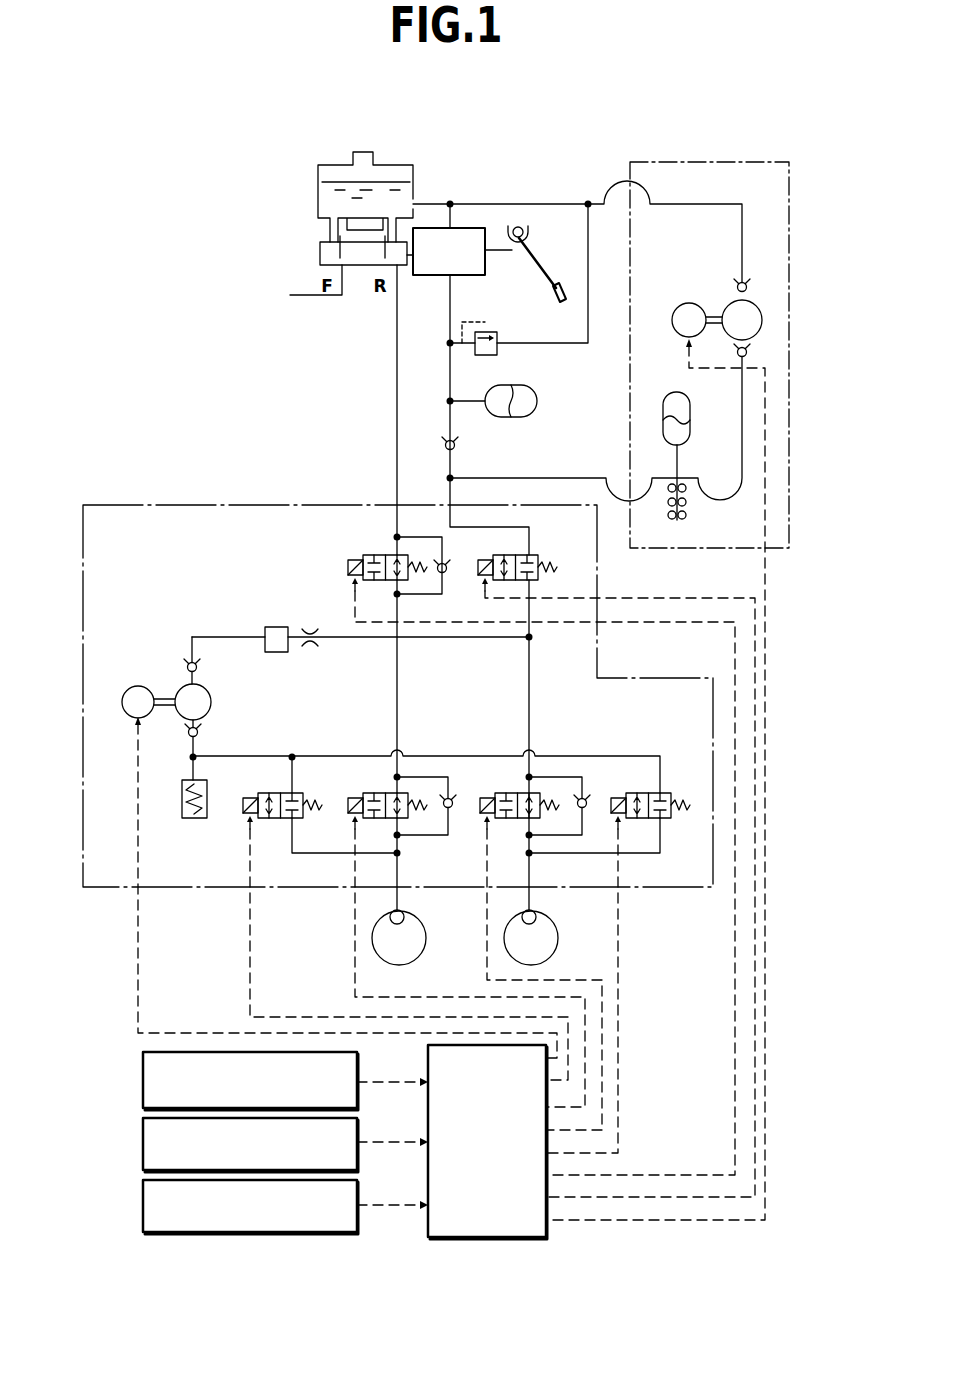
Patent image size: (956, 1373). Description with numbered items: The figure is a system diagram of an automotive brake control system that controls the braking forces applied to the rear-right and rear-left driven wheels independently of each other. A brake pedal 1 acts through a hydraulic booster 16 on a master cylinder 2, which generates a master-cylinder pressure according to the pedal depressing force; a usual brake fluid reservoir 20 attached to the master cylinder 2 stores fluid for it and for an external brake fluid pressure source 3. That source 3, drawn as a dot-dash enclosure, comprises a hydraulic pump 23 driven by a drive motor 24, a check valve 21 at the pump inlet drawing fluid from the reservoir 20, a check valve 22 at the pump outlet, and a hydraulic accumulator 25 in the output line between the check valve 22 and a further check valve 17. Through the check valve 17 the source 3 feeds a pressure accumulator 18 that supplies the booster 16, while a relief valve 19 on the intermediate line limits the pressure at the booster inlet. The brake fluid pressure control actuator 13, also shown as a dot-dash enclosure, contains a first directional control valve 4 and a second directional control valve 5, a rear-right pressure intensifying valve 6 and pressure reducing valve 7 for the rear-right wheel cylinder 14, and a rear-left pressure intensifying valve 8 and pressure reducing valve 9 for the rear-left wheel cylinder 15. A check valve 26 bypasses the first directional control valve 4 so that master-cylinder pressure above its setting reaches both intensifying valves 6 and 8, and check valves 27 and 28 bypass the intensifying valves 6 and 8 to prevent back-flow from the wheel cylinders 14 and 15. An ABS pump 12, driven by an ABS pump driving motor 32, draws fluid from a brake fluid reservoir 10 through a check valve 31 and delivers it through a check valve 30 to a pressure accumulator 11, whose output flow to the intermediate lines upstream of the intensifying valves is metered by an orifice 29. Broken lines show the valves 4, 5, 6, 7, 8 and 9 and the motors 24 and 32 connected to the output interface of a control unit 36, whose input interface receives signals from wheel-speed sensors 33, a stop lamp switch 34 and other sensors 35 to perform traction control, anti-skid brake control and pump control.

The brake pedal 1 is at (540, 262).
The master cylinder 2 is at (320, 252).
The external brake fluid pressure source 3 is at (700, 161).
The first directional control valve 4 is at (376, 552).
The second directional control valve 5 is at (538, 555).
The rear-right wheel-cylinder pressure intensifying valve 6 is at (369, 793).
The rear-right wheel-cylinder pressure reducing valve 7 is at (266, 793).
The rear-left wheel-cylinder pressure intensifying valve 8 is at (505, 793).
The rear-left wheel-cylinder pressure reducing valve 9 is at (646, 794).
The brake fluid reservoir 10 is at (174, 799).
The pressure accumulator 11 is at (276, 626).
The auxiliary pump (ABS pump) 12 is at (212, 702).
The brake fluid pressure control actuator 13 is at (253, 503).
The rear-right wheel cylinder 14 is at (427, 943).
The rear-left wheel cylinder 15 is at (559, 943).
The hydraulic booster 16 is at (487, 273).
The check valve 17 is at (458, 446).
The pressure accumulator 18 is at (538, 401).
The relief valve 19 is at (500, 338).
The brake fluid reservoir 20 is at (415, 172).
The check valve 21 is at (748, 282).
The check valve 22 is at (750, 352).
The hydraulic pump 23 is at (735, 302).
The drive motor 24 is at (680, 303).
The hydraulic accumulator 25 is at (672, 390).
The check valve 26 is at (448, 566).
The check valve 27 is at (450, 812).
The check valve 28 is at (586, 814).
The orifice 29 is at (318, 646).
The check valve 30 is at (203, 735).
The check valve 31 is at (200, 667).
The ABS pump driving motor 32 is at (140, 684).
The wheel-speed sensors 33 is at (142, 1090).
The stop lamp switch 34 is at (142, 1138).
The other sensors 35 is at (142, 1210).
The control unit 36 is at (458, 1238).